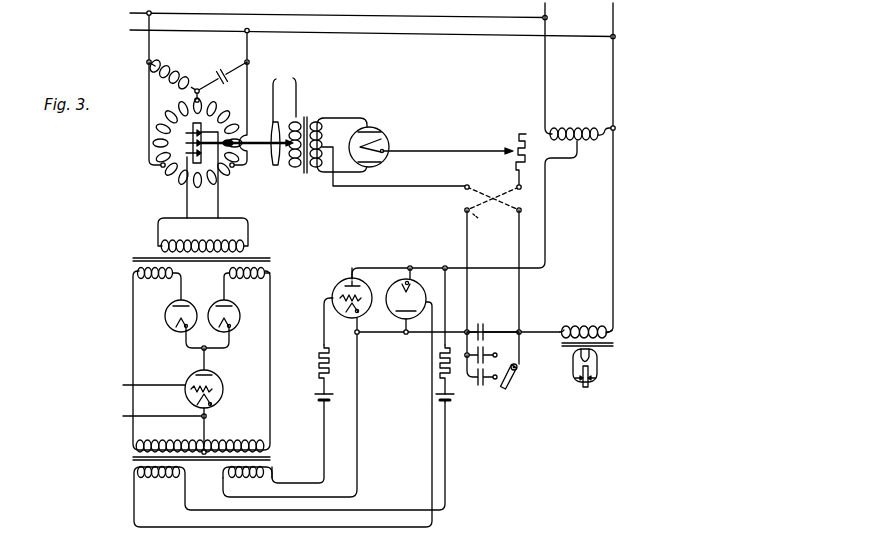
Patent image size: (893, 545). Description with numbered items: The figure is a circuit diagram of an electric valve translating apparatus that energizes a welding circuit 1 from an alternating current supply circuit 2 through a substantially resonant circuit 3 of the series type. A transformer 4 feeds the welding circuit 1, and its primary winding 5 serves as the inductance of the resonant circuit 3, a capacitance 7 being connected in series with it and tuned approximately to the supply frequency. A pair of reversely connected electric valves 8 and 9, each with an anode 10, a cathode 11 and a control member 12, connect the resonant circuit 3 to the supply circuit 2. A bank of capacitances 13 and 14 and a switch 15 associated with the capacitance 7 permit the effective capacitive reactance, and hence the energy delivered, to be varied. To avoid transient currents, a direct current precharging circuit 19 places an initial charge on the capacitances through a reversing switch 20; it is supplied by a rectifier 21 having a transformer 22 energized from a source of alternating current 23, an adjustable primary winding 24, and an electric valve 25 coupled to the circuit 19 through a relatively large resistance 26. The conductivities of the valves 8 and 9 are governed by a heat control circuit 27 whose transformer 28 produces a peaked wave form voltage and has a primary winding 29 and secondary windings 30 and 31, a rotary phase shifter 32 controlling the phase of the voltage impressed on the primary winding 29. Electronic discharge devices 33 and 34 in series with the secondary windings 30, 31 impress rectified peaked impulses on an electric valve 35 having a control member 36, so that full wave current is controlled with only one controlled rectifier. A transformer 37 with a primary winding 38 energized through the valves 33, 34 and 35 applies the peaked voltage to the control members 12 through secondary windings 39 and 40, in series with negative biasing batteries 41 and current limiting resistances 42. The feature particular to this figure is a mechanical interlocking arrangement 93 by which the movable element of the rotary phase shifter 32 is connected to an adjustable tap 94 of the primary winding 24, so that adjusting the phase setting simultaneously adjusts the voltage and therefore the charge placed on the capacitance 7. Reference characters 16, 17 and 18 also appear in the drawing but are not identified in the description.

The welding circuit 1 is at (597, 380).
The alternating current supply circuit 2 is at (606, 63).
The resonant circuit 3 is at (576, 322).
The transformer 4 is at (614, 345).
The primary winding 5 is at (584, 328).
The capacitance 7 is at (480, 323).
The electric valve 8 is at (364, 293).
The electric valve 9 is at (420, 293).
The anode 10 is at (347, 285).
The cathode 11 is at (347, 312).
The control member 12 is at (338, 297).
The capacitance 13 is at (484, 385).
The capacitance 14 is at (486, 350).
The switch 15 is at (513, 376).
The relay coil 16 is at (586, 120).
The coil terminal 17 is at (601, 133).
The coil tap 18 is at (577, 140).
The direct current circuit 19 is at (516, 186).
The reversing switch 20 is at (478, 216).
The rectifier 21 is at (358, 111).
The transformer 22 is at (307, 175).
The source of alternating current 23 is at (284, 90).
The adjustable primary winding 24 is at (304, 119).
The electric valve 25 is at (385, 138).
The resistance 26 is at (511, 141).
The heat control circuit 27 is at (248, 427).
The transformer 28 is at (272, 261).
The primary winding 29 is at (203, 235).
The secondary winding 30 is at (160, 285).
The secondary winding 31 is at (247, 285).
The rotary phase shifter 32 is at (223, 170).
The electronic discharge device 33 is at (175, 334).
The electronic discharge device 34 is at (233, 334).
The electric valve 35 is at (222, 378).
The control member 36 is at (221, 392).
The transformer 37 is at (272, 460).
The primary winding 38 is at (239, 446).
The secondary winding 39 is at (159, 484).
The secondary winding 40 is at (247, 484).
The battery 41 is at (316, 400).
The current limiting resistance 42 is at (318, 366).
The mechanical interlocking arrangement 93 is at (271, 151).
The adjustable tap 94 is at (277, 167).